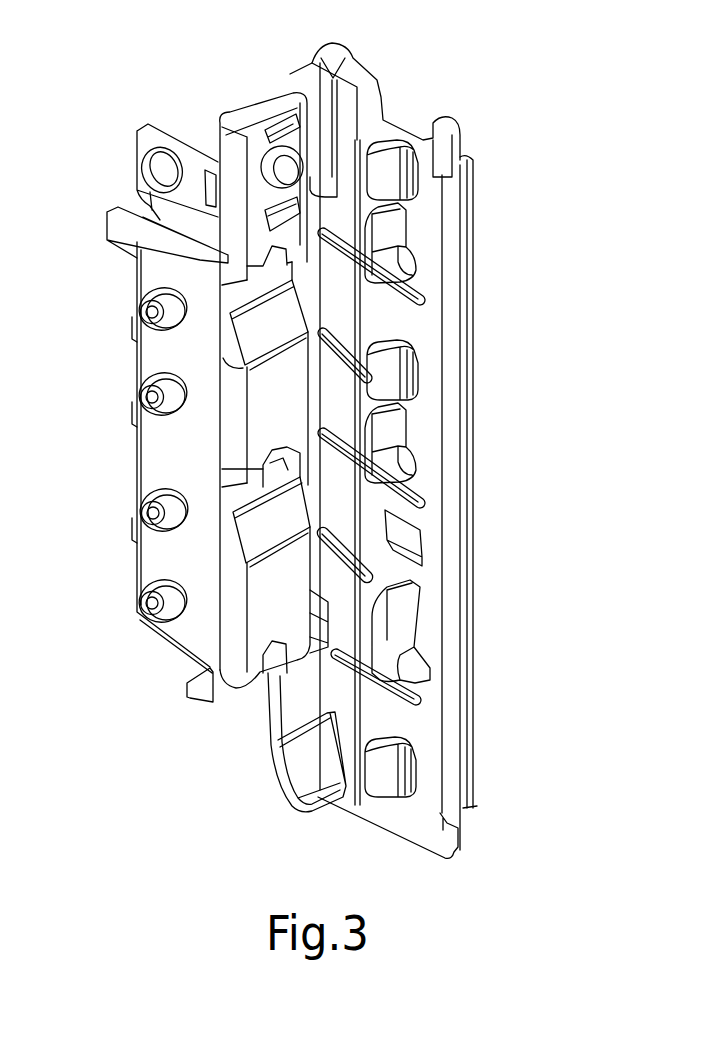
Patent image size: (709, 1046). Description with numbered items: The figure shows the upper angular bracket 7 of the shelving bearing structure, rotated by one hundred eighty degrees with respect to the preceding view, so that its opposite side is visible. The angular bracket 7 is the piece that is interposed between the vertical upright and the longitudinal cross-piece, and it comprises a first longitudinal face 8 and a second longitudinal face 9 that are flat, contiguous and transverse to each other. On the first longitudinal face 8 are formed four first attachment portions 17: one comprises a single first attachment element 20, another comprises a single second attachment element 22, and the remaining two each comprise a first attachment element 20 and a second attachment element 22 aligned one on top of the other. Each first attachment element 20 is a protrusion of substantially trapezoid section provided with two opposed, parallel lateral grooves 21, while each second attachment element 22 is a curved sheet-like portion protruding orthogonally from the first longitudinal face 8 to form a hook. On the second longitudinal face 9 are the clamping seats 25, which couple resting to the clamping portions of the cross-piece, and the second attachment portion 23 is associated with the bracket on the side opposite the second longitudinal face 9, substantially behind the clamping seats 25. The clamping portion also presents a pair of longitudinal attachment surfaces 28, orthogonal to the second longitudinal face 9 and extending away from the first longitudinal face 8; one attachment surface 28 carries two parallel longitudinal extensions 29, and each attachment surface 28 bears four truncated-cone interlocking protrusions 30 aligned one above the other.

The angular bracket 7 is at (632, 91).
The first longitudinal face 8 is at (422, 198).
The second longitudinal face 9 is at (256, 612).
The first attachment portions 17 is at (447, 107).
The first attachment element 20 is at (392, 147).
The lateral grooves 21 is at (417, 182).
The second attachment element 22 is at (388, 238).
The second attachment portion 23 is at (158, 550).
The clamping seats 25 is at (262, 460).
The attachment surfaces 28 is at (188, 140).
The longitudinal extensions 29 is at (137, 188).
The interlocking protrusions 30 is at (147, 293).